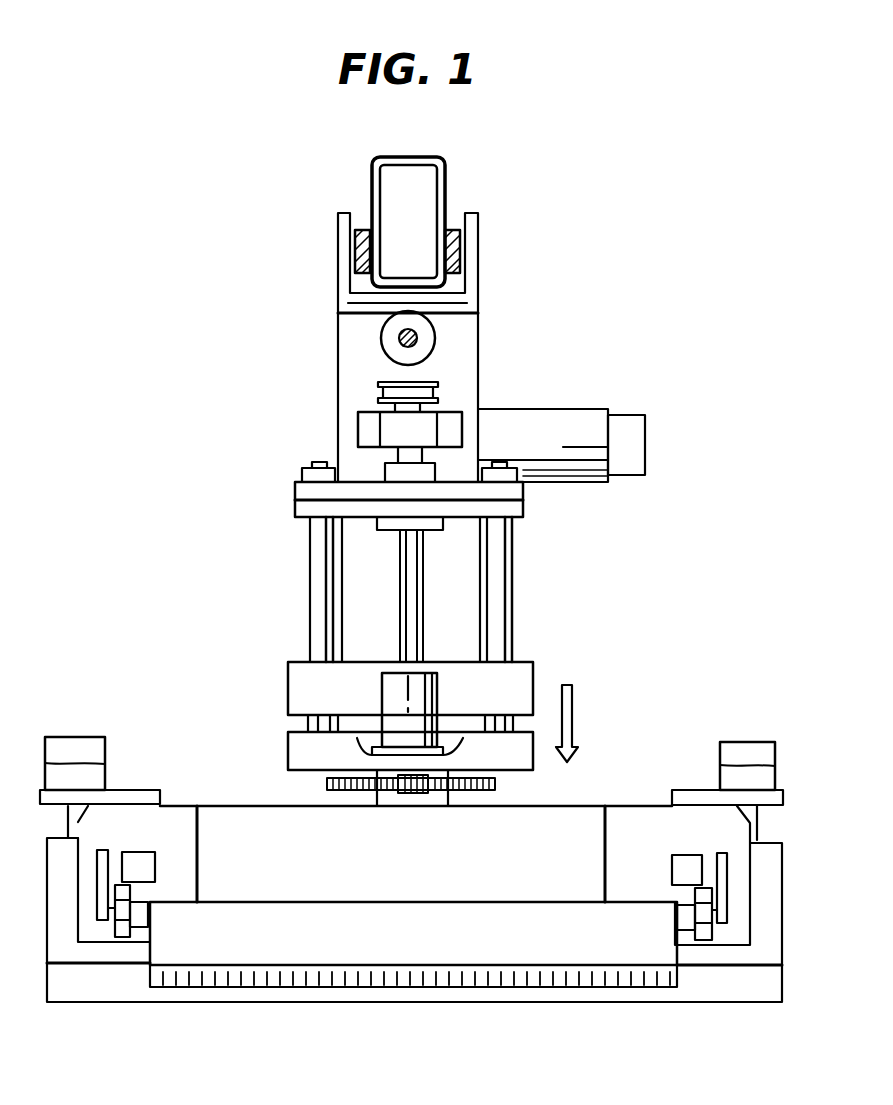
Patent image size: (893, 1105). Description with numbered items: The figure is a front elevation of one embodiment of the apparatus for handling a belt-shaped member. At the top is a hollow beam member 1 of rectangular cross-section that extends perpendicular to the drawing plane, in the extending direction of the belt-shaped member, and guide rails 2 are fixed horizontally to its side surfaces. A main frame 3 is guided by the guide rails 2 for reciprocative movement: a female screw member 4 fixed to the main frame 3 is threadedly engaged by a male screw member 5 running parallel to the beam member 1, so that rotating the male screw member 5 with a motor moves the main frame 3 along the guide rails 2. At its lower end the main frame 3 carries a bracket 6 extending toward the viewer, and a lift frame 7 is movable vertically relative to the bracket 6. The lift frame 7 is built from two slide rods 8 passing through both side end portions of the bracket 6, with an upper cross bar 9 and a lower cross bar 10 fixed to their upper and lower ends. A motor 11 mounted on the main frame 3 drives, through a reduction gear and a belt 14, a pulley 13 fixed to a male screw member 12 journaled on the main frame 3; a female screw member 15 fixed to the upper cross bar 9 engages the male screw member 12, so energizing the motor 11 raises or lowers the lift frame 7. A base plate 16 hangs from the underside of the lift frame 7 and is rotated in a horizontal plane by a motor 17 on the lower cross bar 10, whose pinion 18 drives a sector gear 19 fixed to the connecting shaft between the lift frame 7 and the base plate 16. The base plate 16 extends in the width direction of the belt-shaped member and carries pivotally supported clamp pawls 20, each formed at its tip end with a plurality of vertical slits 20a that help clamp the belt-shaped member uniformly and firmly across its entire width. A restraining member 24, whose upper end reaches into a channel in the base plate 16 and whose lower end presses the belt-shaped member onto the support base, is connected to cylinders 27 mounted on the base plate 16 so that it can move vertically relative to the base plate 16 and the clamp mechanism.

The hollow beam member 1 is at (440, 168).
The guide rails 2 is at (356, 250).
The main frame 3 is at (509, 316).
The female screw member 4 is at (381, 337).
The male screw member 5 is at (418, 338).
The bracket 6 is at (540, 684).
The lift frame 7 is at (540, 574).
The slide rods 8 is at (310, 570).
The upper cross bar 9 is at (298, 495).
The lower cross bar 10 is at (295, 742).
The motor 11 is at (540, 412).
The male screw member 12 is at (400, 610).
The pulley 13 is at (388, 382).
The belt 14 is at (380, 392).
The female screw member 15 is at (386, 474).
The base plate 16 is at (545, 830).
The motor 17 is at (382, 688).
The pinion 18 is at (410, 800).
The sector gear 19 is at (327, 785).
The clamp pawls 20 is at (540, 935).
The slits 20a is at (490, 988).
The restraining member 24 is at (88, 975).
The cylinders 27 is at (85, 740).